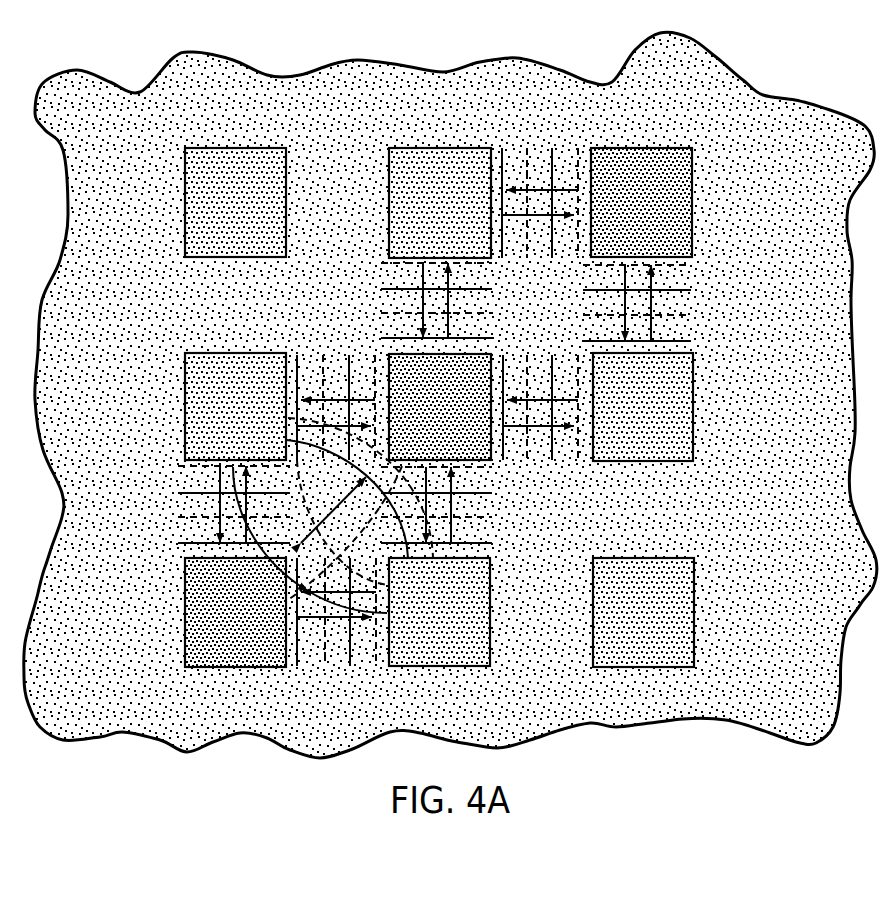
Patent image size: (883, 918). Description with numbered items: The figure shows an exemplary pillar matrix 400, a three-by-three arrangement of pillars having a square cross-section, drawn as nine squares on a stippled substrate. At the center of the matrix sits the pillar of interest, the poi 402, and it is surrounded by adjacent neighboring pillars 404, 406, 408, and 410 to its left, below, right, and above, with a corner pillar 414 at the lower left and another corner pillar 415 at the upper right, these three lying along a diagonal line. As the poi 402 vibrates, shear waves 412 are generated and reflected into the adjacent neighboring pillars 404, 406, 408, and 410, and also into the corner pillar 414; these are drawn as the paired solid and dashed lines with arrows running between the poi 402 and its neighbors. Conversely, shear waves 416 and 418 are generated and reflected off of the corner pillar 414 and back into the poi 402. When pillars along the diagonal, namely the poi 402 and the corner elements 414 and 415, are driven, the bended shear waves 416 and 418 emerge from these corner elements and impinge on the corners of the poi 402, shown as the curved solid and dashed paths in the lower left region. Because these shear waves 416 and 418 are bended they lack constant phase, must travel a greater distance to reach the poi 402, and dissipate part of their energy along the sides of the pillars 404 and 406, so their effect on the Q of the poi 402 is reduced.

The pillar matrix 400 is at (715, 60).
The poi 402 is at (390, 354).
The adjacent neighboring pillar 404 is at (185, 413).
The adjacent neighboring pillar 406 is at (437, 667).
The adjacent neighboring pillar 408 is at (693, 407).
The adjacent neighboring pillar 410 is at (437, 148).
The shear waves 412 is at (482, 289).
The corner pillar 414 is at (185, 615).
The corner pillar 415 is at (693, 207).
The shear waves 416 is at (178, 493).
The shear waves 418 is at (312, 443).